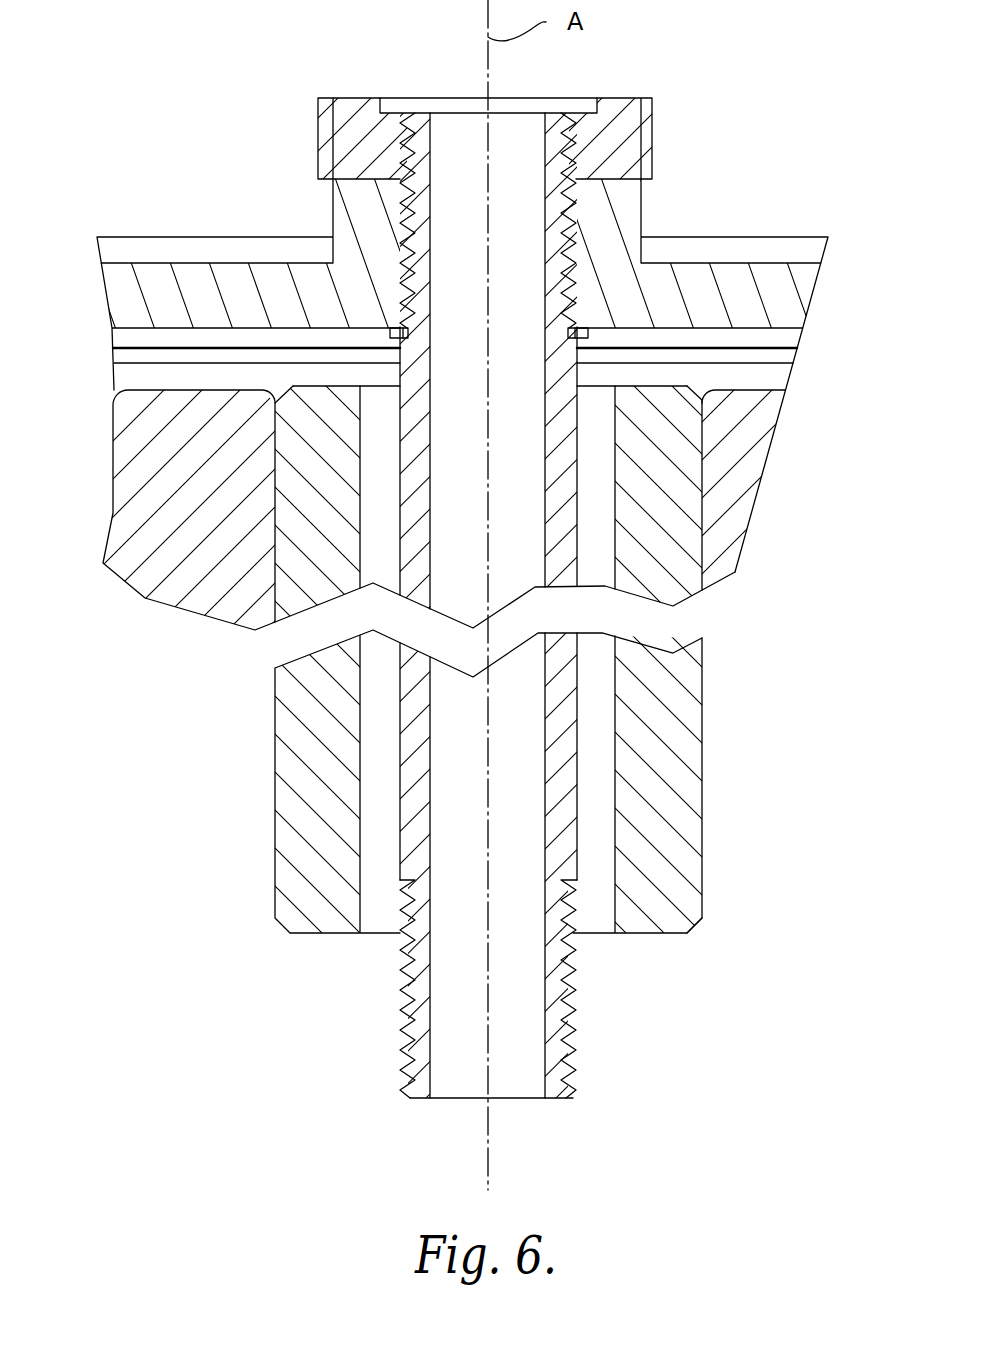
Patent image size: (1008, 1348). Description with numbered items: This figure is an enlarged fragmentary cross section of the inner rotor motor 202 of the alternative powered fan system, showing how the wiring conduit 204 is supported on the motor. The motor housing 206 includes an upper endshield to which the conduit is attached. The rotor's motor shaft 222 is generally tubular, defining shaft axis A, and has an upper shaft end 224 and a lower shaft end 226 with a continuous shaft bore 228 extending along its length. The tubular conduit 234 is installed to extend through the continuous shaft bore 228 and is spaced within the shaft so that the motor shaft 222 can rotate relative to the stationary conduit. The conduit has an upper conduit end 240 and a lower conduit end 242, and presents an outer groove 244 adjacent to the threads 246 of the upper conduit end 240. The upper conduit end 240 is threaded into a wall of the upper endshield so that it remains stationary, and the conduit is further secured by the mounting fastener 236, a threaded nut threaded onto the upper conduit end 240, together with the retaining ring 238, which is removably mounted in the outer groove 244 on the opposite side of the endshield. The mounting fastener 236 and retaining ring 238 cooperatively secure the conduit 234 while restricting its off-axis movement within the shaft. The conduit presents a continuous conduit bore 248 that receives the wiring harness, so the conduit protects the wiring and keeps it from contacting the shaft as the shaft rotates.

The inner rotor motor 202 is at (116, 243).
The wiring conduit 204 is at (567, 793).
The motor housing 206 is at (783, 275).
The motor shaft 222 is at (682, 720).
The upper shaft end 224 is at (668, 386).
The lower shaft end 226 is at (661, 933).
The continuous shaft bore 228 is at (615, 455).
The tubular conduit 234 is at (415, 800).
The mounting fastener 236 is at (637, 127).
The retaining ring 238 is at (392, 334).
The upper conduit end 240 is at (557, 112).
The lower conduit end 242 is at (557, 1100).
The outer groove 244 is at (586, 333).
The threads 246 is at (410, 228).
The continuous conduit bore 248 is at (426, 536).